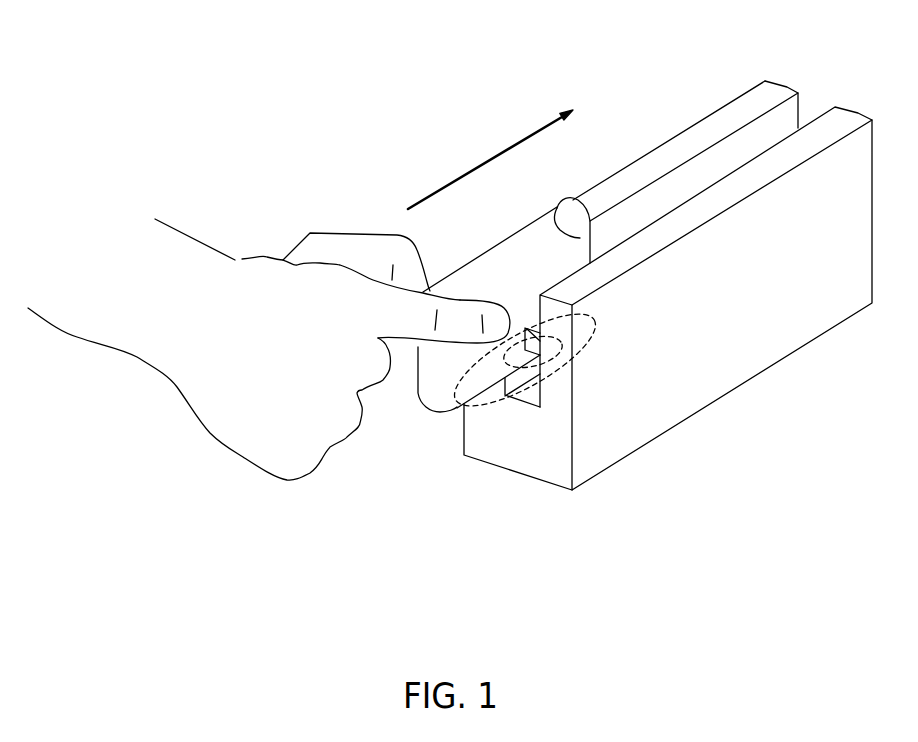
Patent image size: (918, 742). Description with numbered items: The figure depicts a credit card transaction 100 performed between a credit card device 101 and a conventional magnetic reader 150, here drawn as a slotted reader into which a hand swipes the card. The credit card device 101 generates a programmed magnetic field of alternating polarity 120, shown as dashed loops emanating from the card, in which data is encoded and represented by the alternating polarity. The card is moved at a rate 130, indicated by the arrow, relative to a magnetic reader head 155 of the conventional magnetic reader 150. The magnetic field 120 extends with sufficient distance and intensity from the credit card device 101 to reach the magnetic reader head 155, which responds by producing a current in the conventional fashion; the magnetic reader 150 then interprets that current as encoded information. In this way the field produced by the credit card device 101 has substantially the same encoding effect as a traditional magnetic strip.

The credit card transaction 100 is at (153, 40).
The credit card device 101 is at (560, 202).
The magnetic field of alternating polarity 120 is at (493, 413).
The rate 130 is at (502, 148).
The conventional magnetic reader 150 is at (842, 303).
The magnetic reader head 155 is at (530, 328).